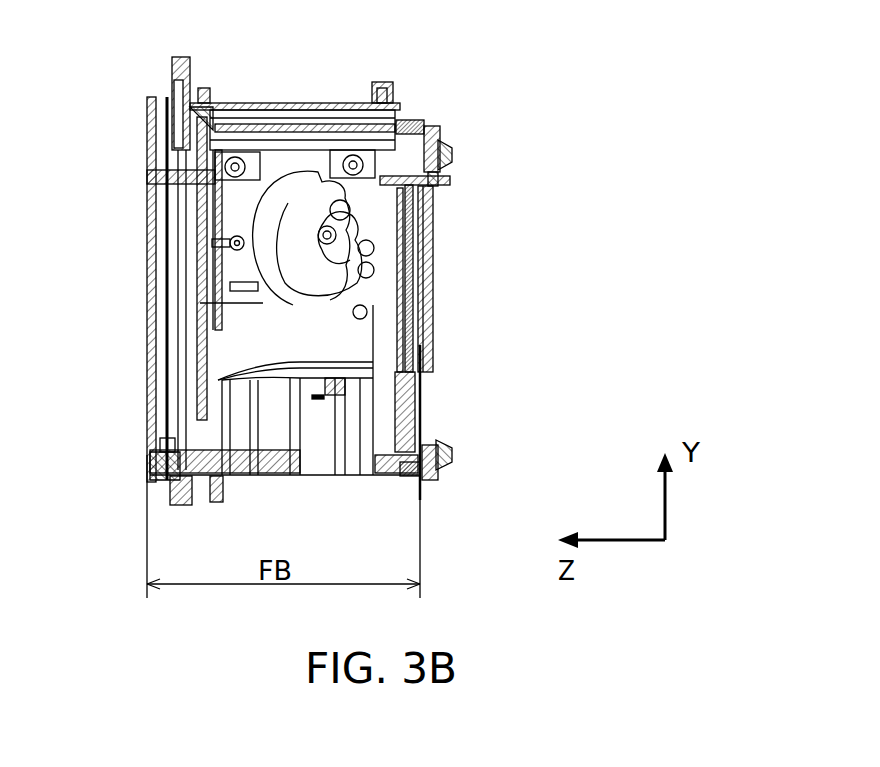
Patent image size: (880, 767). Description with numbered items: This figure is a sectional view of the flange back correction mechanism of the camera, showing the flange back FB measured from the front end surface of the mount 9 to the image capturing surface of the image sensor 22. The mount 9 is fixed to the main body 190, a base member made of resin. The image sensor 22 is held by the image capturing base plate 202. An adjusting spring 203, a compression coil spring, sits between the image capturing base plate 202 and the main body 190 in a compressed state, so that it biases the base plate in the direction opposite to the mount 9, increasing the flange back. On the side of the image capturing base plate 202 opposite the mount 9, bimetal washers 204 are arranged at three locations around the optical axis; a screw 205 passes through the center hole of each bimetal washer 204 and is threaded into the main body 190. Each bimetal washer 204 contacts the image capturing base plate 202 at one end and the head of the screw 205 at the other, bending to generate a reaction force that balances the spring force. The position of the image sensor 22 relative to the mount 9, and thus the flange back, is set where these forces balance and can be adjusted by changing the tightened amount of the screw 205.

The mount 9 is at (147, 462).
The main body 190 is at (300, 103).
The adjusting spring 203 is at (405, 127).
The bimetal washer 204 is at (423, 133).
The screw 205 is at (447, 150).
The image sensor 22 is at (423, 357).
The image capturing base plate 202 is at (423, 478).